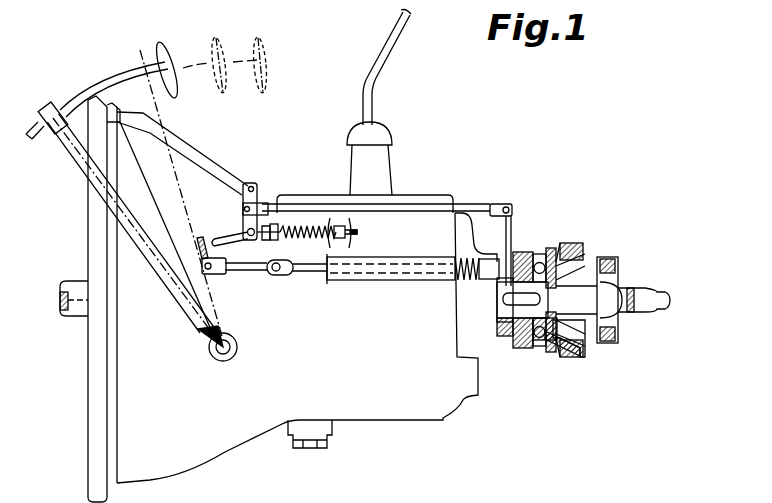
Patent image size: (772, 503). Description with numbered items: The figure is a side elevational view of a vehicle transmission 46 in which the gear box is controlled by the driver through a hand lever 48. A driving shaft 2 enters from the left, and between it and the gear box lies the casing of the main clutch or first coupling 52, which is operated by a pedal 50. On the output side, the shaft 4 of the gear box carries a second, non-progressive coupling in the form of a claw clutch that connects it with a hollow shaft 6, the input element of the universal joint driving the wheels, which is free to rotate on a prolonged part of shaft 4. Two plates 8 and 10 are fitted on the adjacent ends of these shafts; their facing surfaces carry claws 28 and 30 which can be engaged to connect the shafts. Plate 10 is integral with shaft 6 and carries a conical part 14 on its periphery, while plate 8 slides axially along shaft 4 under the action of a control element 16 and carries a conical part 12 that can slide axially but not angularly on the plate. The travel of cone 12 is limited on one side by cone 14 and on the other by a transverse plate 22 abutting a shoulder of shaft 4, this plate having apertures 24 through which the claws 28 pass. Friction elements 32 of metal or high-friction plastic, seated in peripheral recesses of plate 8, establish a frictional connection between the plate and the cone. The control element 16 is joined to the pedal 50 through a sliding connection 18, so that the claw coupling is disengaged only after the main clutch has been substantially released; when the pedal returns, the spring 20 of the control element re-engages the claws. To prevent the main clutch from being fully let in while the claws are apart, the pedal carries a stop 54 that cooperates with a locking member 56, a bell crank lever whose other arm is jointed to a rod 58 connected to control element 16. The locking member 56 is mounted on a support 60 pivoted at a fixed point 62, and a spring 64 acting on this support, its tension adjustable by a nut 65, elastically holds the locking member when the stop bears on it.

The driving shaft 2 is at (73, 318).
The output shaft 4 is at (500, 305).
The hollow shaft 6 is at (588, 320).
The plate 8 is at (533, 258).
The plate 10 is at (573, 258).
The conical part 12 is at (575, 247).
The conical part 14 is at (587, 247).
The control element 16 is at (495, 265).
The sliding connection 18 is at (282, 276).
The spring 20 is at (478, 270).
The transverse plate 22 is at (540, 262).
The apertures 24 is at (543, 338).
The claws 28 is at (535, 343).
The claws 30 is at (582, 353).
The friction elements 32 is at (515, 340).
The transmission 46 is at (386, 384).
The hand lever 48 is at (372, 93).
The pedal 50 is at (125, 223).
The casing of the main clutch 52 is at (134, 428).
The stop 54 is at (200, 257).
The locking member 56 is at (224, 238).
The rod 58 is at (415, 207).
The support 60 is at (255, 200).
The fixed point 62 is at (252, 184).
The spring 64 is at (303, 226).
The nut 65 is at (268, 240).